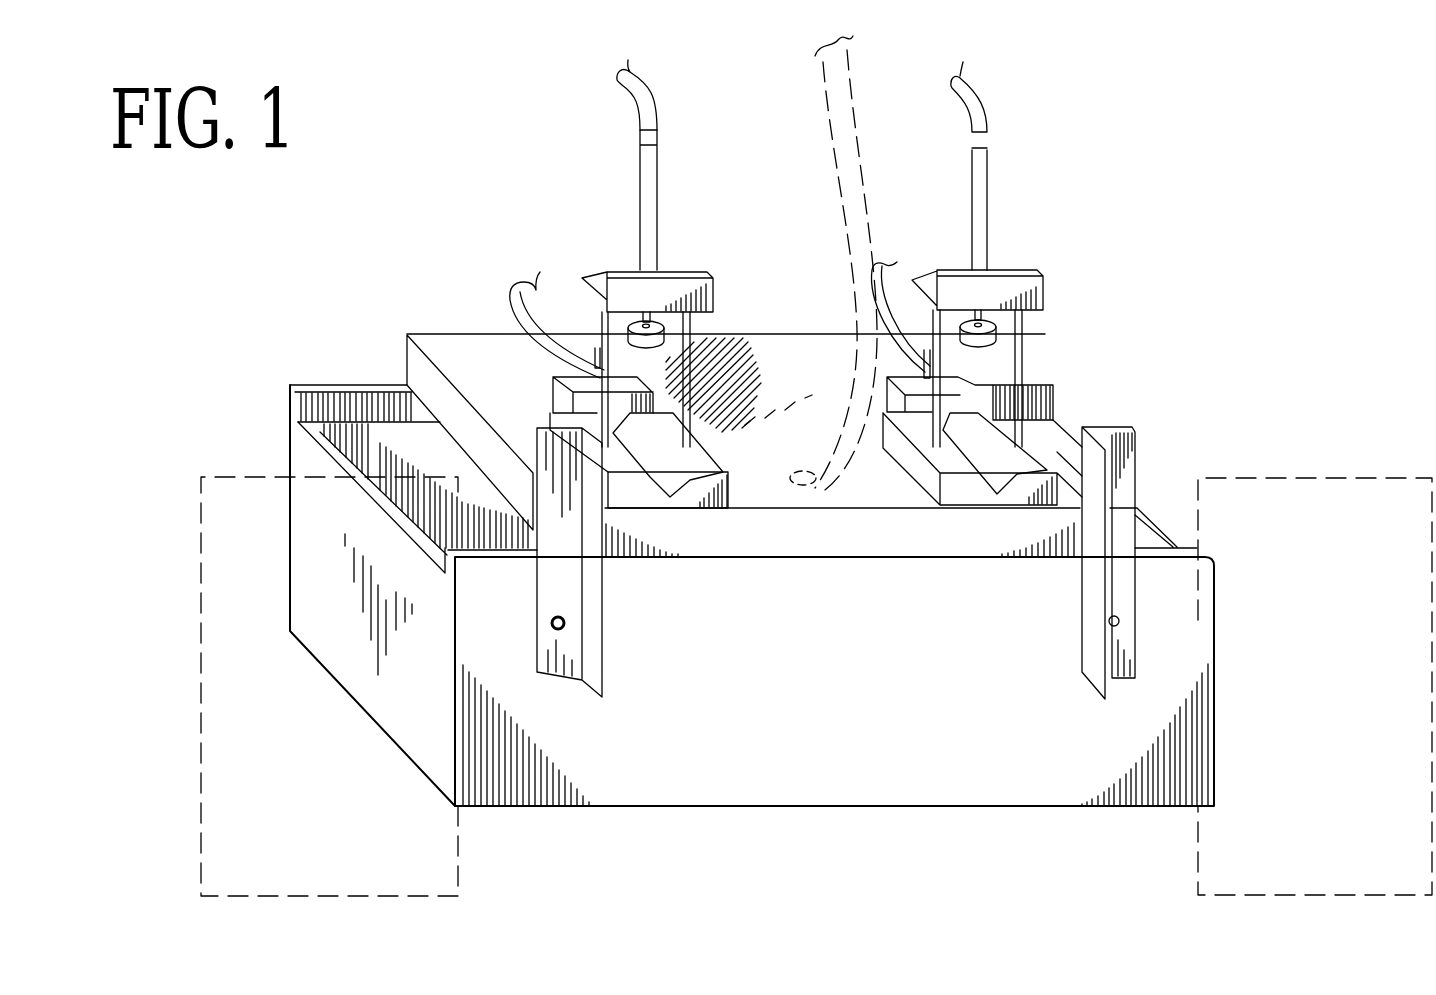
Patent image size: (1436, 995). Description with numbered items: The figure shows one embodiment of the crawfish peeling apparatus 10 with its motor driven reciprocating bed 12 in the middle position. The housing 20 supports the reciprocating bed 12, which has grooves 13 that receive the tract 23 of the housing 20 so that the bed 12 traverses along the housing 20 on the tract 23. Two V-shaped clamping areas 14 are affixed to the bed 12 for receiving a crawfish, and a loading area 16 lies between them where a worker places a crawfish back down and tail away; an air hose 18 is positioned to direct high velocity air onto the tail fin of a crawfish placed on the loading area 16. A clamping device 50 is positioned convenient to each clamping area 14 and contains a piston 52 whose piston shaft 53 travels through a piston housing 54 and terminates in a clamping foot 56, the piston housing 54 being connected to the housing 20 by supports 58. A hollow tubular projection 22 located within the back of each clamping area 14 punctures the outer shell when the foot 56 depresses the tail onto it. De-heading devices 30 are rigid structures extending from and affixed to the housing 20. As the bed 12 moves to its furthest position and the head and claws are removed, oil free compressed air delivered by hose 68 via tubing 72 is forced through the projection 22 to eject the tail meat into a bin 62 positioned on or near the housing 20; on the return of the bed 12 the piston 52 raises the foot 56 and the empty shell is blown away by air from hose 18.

The crawfish peeling apparatus 10 is at (310, 277).
The reciprocating bed 12 is at (831, 381).
The grooves 13 is at (402, 383).
The clamping areas 14 is at (662, 463).
The loading area 16 is at (778, 471).
The air hose 18 is at (845, 130).
The housing 20 is at (433, 679).
The hollow tubular projection 22 is at (553, 378).
The tract 23 is at (298, 383).
The de-heading devices 30 is at (603, 627).
The clamping device 50 is at (825, 253).
The piston 52 is at (656, 170).
The piston shaft 53 is at (630, 318).
The piston housing 54 is at (660, 297).
The clamping foot 56 is at (667, 333).
The supports 58 is at (693, 345).
The bins 62 is at (316, 788).
The hose 68 is at (512, 300).
The tubing 72 is at (988, 104).